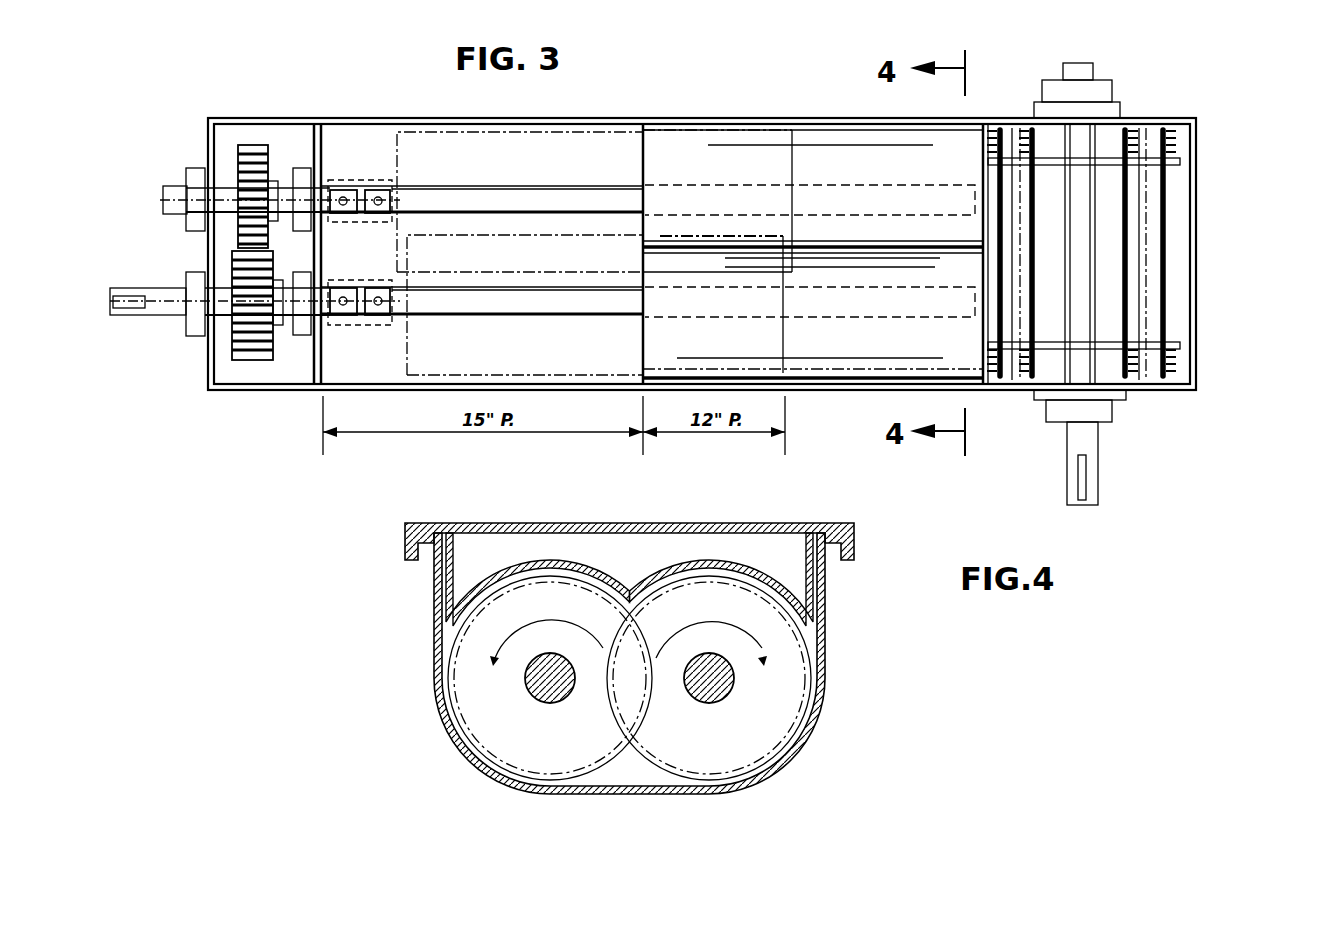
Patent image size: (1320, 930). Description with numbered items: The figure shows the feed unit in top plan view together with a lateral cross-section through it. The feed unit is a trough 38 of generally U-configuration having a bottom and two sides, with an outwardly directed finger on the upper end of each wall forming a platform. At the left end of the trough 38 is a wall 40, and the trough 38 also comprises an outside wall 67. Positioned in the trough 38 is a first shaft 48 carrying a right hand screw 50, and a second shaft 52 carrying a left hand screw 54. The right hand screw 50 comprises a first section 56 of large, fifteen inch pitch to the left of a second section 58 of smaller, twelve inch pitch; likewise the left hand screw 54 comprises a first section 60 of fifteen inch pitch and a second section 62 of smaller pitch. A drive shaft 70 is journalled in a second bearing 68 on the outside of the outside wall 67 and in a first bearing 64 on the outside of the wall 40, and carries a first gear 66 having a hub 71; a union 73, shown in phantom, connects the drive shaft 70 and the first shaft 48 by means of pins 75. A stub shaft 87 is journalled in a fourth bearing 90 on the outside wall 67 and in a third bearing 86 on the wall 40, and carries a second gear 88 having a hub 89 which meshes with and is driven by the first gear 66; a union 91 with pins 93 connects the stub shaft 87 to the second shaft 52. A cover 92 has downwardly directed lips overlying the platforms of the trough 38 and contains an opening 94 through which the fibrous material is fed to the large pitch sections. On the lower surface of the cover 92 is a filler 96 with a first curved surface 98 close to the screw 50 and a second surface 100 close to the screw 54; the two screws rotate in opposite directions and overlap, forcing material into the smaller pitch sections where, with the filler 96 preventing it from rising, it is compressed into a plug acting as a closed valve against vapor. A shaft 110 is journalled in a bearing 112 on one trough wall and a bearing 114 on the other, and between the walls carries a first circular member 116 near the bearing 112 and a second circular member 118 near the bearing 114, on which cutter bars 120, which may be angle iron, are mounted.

In FIG. 3, the trough 38 is at (655, 80).
In FIG. 4, the trough 38 is at (578, 796).
In FIG. 3, the wall 40 is at (313, 360).
In FIG. 3, the first shaft 48 is at (557, 300).
In FIG. 4, the first shaft 48 is at (555, 692).
In FIG. 3, the right hand screw 50 is at (463, 358).
In FIG. 3, the second shaft 52 is at (600, 200).
In FIG. 4, the second shaft 52 is at (712, 692).
In FIG. 3, the left hand screw 54 is at (420, 140).
In FIG. 3, the first section 56 is at (394, 388).
In FIG. 3, the second section 58 is at (655, 343).
In FIG. 4, the second section 58 is at (470, 680).
In FIG. 3, the first section 60 is at (535, 172).
In FIG. 3, the second section 62 is at (688, 152).
In FIG. 4, the second section 62 is at (786, 688).
In FIG. 3, the first bearing 64 is at (305, 333).
In FIG. 3, the first gear 66 is at (240, 337).
In FIG. 3, the outside wall 67 is at (208, 138).
In FIG. 3, the second bearing 68 is at (197, 287).
In FIG. 3, the drive shaft 70 is at (140, 285).
In FIG. 3, the hub 71 is at (282, 318).
In FIG. 3, the union 73 is at (372, 286).
In FIG. 3, the pins 75 is at (368, 327).
In FIG. 3, the third bearing 86 is at (316, 177).
In FIG. 3, the stub shaft 87 is at (153, 210).
In FIG. 3, the second gear 88 is at (252, 147).
In FIG. 3, the hub 89 is at (302, 177).
In FIG. 3, the fourth bearing 90 is at (198, 177).
In FIG. 3, the union 91 is at (348, 188).
In FIG. 4, the cover 92 is at (526, 520).
In FIG. 3, the pins 93 is at (372, 222).
In FIG. 3, the opening 94 is at (515, 358).
In FIG. 4, the filler 96 is at (633, 548).
In FIG. 4, the first curved surface 98 is at (520, 572).
In FIG. 4, the second surface 100 is at (738, 572).
In FIG. 3, the shaft 110 is at (1078, 66).
In FIG. 3, the bearing 112 is at (1110, 107).
In FIG. 3, the bearing 114 is at (1100, 413).
In FIG. 3, the first circular member 116 is at (1105, 160).
In FIG. 3, the second circular member 118 is at (1057, 347).
In FIG. 3, the cutter bars 120 is at (1123, 217).